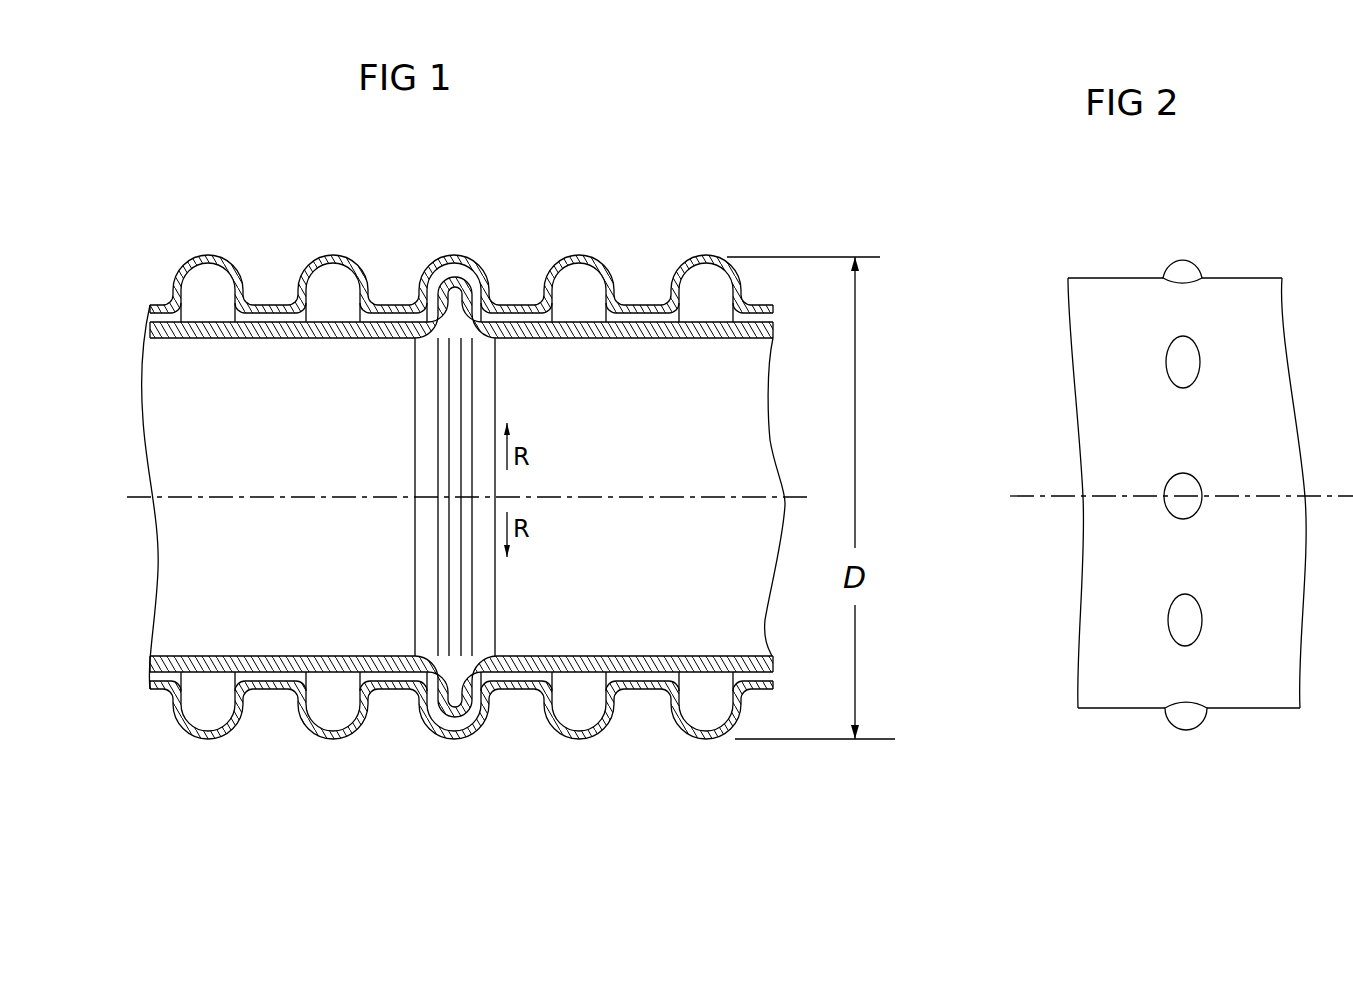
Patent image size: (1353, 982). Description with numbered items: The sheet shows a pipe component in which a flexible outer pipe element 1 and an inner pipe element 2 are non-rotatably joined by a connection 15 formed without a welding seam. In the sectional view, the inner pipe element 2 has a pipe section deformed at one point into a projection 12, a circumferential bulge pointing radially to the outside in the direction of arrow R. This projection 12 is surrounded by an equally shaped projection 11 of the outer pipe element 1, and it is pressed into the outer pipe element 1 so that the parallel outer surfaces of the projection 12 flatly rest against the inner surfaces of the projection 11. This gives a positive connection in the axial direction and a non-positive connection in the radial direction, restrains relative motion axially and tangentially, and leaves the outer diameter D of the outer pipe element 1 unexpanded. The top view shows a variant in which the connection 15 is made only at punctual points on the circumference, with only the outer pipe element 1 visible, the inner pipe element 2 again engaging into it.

In FIG. 1, the outer pipe element 1 is at (773, 308).
In FIG. 2, the outer pipe element 1 is at (1263, 338).
In FIG. 1, the inner pipe element 2 is at (762, 332).
In FIG. 1, the projection of the outer pipe element 11 is at (483, 270).
In FIG. 1, the projection of the inner pipe element 12 is at (490, 328).
In FIG. 1, the connection 15 is at (465, 484).
In FIG. 2, the connection 15 is at (1203, 252).